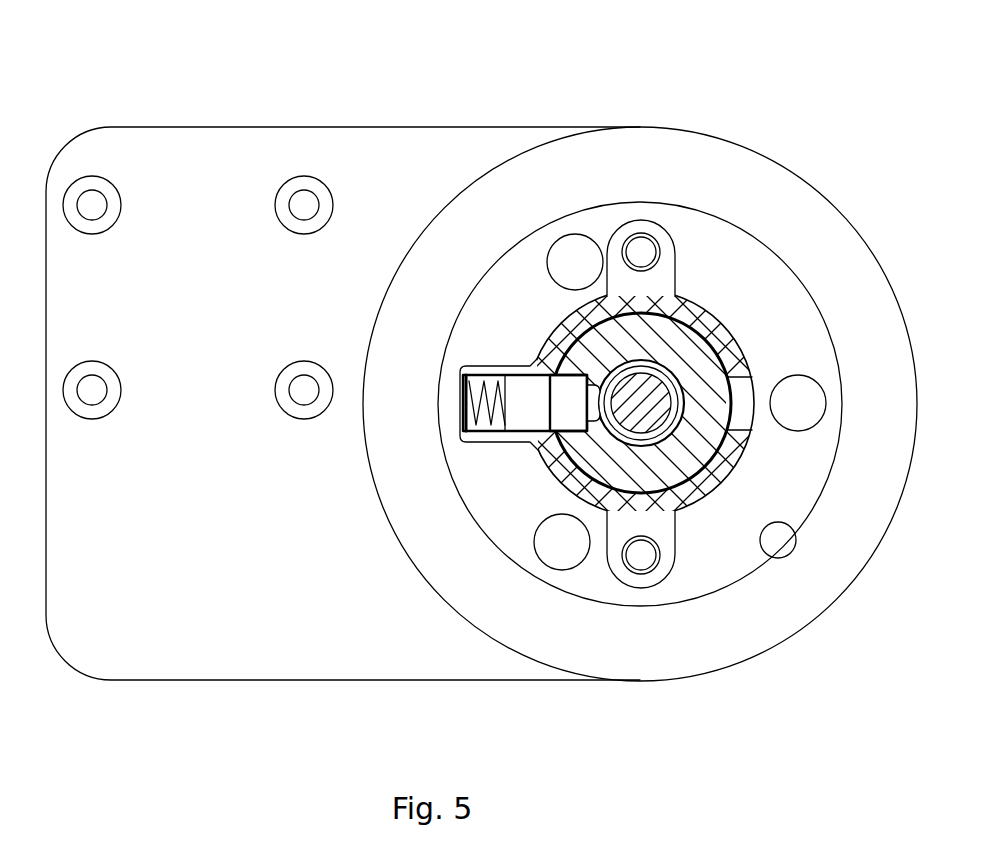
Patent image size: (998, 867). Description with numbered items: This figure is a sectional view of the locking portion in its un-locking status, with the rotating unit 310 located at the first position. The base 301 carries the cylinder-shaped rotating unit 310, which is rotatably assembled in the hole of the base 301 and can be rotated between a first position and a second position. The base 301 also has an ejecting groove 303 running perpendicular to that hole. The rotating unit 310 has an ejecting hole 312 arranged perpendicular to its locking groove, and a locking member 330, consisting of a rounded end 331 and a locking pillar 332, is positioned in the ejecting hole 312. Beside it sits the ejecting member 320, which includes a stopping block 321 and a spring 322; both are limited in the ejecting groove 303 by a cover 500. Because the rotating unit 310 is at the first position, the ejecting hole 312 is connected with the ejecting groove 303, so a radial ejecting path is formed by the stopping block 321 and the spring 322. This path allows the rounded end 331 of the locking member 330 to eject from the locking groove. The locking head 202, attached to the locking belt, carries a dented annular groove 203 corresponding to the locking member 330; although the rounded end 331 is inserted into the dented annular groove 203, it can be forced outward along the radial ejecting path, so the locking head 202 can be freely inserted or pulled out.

The locking head 202 is at (655, 402).
The dented annular groove 203 is at (662, 392).
The base 301 is at (653, 507).
The ejecting groove 303 is at (485, 443).
The rotating unit 310 is at (675, 521).
The ejecting hole 312 is at (567, 460).
The ejecting member 320 is at (489, 219).
The stopping block 321 is at (520, 392).
The spring 322 is at (460, 393).
The locking member 330 is at (623, 296).
The rounded end 331 is at (643, 255).
The locking pillar 332 is at (567, 397).
The cover 500 is at (460, 407).